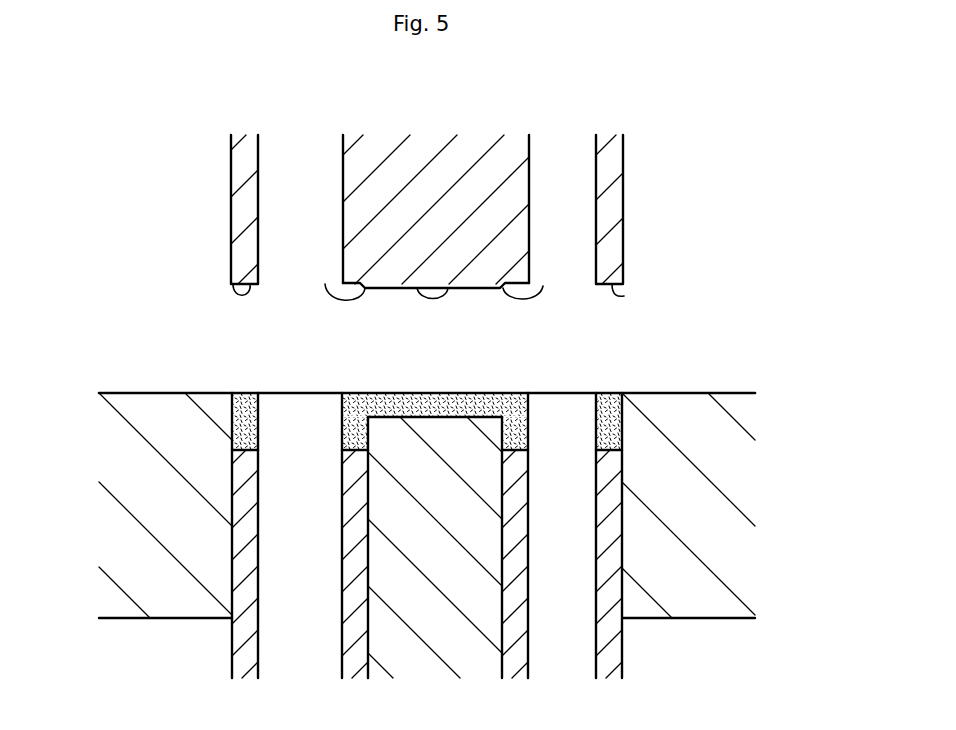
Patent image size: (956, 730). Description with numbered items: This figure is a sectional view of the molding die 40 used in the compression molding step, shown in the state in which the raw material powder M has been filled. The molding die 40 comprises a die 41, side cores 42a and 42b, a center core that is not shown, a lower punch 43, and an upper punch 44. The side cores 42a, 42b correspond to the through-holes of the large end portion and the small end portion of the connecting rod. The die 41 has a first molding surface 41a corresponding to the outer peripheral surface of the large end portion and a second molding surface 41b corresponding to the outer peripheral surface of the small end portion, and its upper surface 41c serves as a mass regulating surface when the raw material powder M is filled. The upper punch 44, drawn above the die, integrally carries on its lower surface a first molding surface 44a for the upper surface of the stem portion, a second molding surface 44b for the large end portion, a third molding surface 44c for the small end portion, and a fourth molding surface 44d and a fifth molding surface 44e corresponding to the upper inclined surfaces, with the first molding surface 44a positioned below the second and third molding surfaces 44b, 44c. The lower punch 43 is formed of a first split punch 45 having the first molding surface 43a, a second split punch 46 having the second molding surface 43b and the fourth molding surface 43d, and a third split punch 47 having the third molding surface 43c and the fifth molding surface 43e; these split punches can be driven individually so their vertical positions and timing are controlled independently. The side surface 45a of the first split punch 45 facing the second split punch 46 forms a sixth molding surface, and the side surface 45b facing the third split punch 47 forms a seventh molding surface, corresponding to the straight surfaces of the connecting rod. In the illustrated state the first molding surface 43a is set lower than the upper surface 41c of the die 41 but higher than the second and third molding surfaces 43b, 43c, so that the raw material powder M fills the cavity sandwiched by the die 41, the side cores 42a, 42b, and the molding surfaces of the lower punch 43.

The molding die 40 is at (541, 103).
The upper punch 44 is at (405, 157).
The first molding surface 44a is at (440, 292).
The second molding surface 44b is at (241, 297).
The third molding surface 44c is at (624, 296).
The fourth molding surface 44d is at (332, 291).
The fifth molding surface 44e is at (544, 289).
The die 41 is at (140, 410).
The first molding surface 41a is at (232, 505).
The second molding surface 41b is at (622, 528).
The upper surface 41c is at (697, 393).
The side core 42a is at (278, 410).
The side core 42b is at (582, 410).
The lower punch 43 is at (419, 655).
The first molding surface 43a is at (437, 411).
The second molding surface 43b is at (255, 446).
The third molding surface 43c is at (599, 448).
The fourth molding surface 43d is at (362, 450).
The fifth molding surface 43e is at (521, 450).
The first split punch 45 is at (407, 440).
The side surface 45a is at (368, 446).
The side surface 45b is at (513, 440).
The second split punch 46 is at (342, 428).
The third split punch 47 is at (528, 430).
The raw material powder M is at (450, 405).